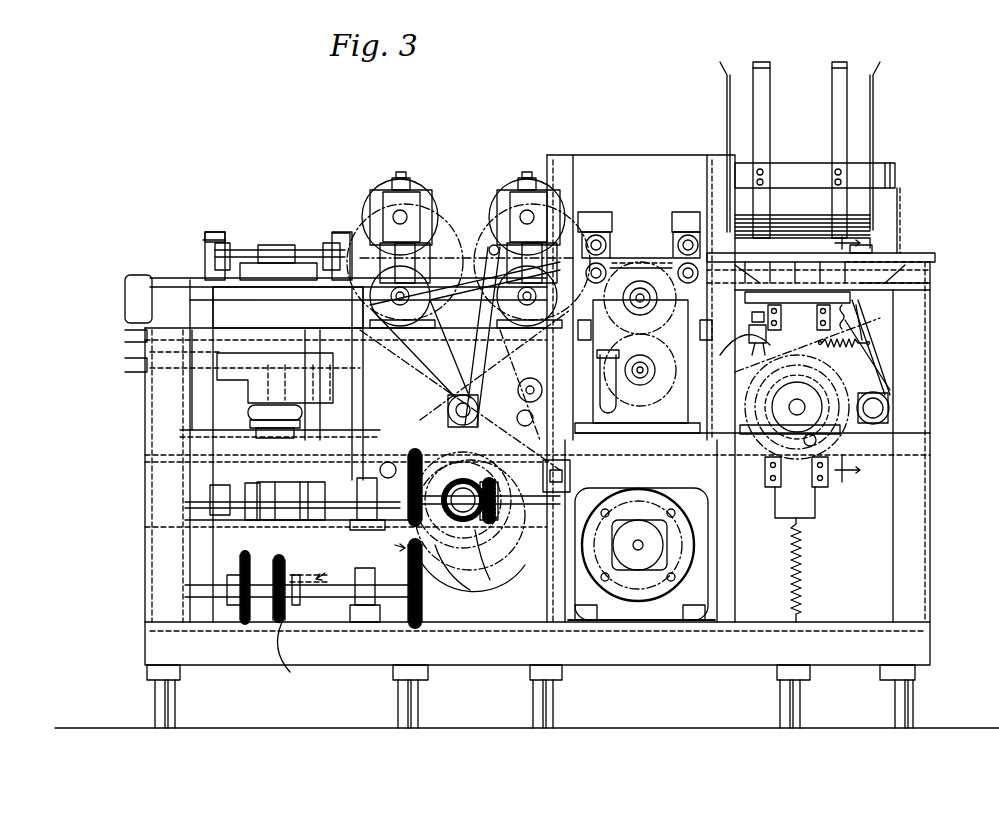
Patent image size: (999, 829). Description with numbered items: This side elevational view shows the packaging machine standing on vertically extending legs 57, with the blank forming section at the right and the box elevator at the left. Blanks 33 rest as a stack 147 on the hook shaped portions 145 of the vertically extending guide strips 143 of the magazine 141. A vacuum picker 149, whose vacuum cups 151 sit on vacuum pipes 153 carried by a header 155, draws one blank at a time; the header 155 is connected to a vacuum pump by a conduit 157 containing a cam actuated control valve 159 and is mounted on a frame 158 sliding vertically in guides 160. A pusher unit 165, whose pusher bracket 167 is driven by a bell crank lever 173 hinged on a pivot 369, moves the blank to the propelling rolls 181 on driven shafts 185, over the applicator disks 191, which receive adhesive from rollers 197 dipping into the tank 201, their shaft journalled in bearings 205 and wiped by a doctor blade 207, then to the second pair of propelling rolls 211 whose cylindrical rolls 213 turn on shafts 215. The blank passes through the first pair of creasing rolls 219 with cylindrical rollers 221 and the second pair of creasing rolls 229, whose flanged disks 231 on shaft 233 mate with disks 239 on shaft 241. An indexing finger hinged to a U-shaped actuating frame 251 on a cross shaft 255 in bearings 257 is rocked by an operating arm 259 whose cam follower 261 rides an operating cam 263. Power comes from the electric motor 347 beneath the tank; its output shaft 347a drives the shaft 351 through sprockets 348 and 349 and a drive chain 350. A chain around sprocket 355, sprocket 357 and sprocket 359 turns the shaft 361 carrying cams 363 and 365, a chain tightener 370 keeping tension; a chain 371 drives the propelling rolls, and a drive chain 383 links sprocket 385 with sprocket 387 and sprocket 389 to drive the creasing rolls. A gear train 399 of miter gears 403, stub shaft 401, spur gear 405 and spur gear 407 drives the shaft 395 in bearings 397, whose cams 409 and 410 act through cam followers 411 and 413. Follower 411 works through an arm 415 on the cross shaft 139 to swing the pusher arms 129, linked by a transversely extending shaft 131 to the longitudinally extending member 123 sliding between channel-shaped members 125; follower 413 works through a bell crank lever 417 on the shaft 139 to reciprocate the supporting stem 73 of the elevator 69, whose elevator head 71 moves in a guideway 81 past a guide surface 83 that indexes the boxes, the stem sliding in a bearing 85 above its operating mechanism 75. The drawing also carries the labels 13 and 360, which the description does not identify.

The direction of movement 13 is at (836, 366).
The blanks 33 is at (815, 225).
The legs 57 is at (160, 700).
The elevator 69 is at (215, 352).
The elevator head 71 is at (316, 402).
The supporting stem 73 is at (280, 470).
The operating mechanism 75 is at (331, 575).
The guideway 81 is at (248, 395).
The guide surface 83 is at (246, 319).
The bearing 85 is at (262, 425).
The longitudinally extending member 123 is at (277, 245).
The channel-shaped members 125 is at (243, 243).
The pusher arms 129 is at (205, 252).
The transversely extending shaft 131 is at (216, 242).
The cross shaft 139 is at (236, 495).
The magazine 141 is at (894, 118).
The guide strips 143 is at (840, 62).
The hook shaped portion 145 is at (870, 248).
The stack 147 is at (865, 230).
The vacuum picker 149 is at (797, 311).
The vacuum cups 151 is at (880, 262).
The vacuum pipes 153 is at (885, 283).
The header 155 is at (855, 303).
The conduit 157 is at (756, 355).
The frame 158 is at (844, 350).
The control valve 159 is at (750, 460).
The guides 160 is at (773, 365).
The pusher unit 165 is at (876, 340).
The pusher bracket 167 is at (872, 250).
The bell crank lever 173 is at (870, 355).
The propelling rolls 181 is at (650, 240).
The driven shaft 185 is at (680, 240).
The applicator disks 191 is at (622, 320).
The rollers 197 is at (648, 440).
The tank 201 is at (640, 398).
The bearings 205 is at (470, 228).
The doctor blade 207 is at (480, 225).
The second pair of propelling rolls 211 is at (610, 232).
The cylindrical rolls 213 is at (612, 222).
The shaft 215 is at (608, 262).
The first pair of creasing rolls 219 is at (522, 178).
The cylindrical rollers 221 is at (485, 215).
The second pair of creasing rolls 229 is at (405, 215).
The disks 231 is at (345, 195).
The shaft 233 is at (432, 185).
The disks 239 is at (357, 215).
The shaft 241 is at (395, 298).
The actuating frame 251 is at (457, 358).
The cross shaft 255 is at (450, 392).
The bearings 257 is at (524, 388).
The operating arm 259 is at (448, 408).
The cam follower 261 is at (380, 468).
The operating cam 263 is at (465, 565).
The electric motor 347 is at (690, 540).
The output shaft 347a is at (640, 598).
The sprocket 348 is at (620, 485).
The sprocket 349 is at (480, 580).
The drive chain 350 is at (712, 500).
The shaft 351 is at (495, 600).
The sprocket 355 is at (505, 585).
The sprocket 357 is at (657, 325).
The sprocket 359 is at (835, 372).
The block 360 is at (700, 440).
The shaft 361 is at (810, 418).
The cam 363 is at (840, 460).
The cam 365 is at (650, 400).
The pivot 369 is at (890, 405).
The chain tightener 370 is at (517, 417).
The chain 371 is at (578, 302).
The drive chain 383 is at (395, 355).
The sprocket 385 is at (500, 475).
The sprocket 387 is at (488, 345).
The sprocket 389 is at (430, 312).
The shaft 395 is at (325, 600).
The bearings 397 is at (400, 450).
The gear train 399 is at (385, 542).
The stub shaft 401 is at (500, 530).
The miter gears 403 is at (465, 478).
The spur gear 405 is at (395, 525).
The spur gear 407 is at (428, 608).
The cam 409 is at (287, 654).
The cam 410 is at (240, 610).
The cam follower 411 is at (276, 622).
The cam follower 413 is at (240, 565).
The arm 415 is at (312, 555).
The bell crank lever 417 is at (250, 525).